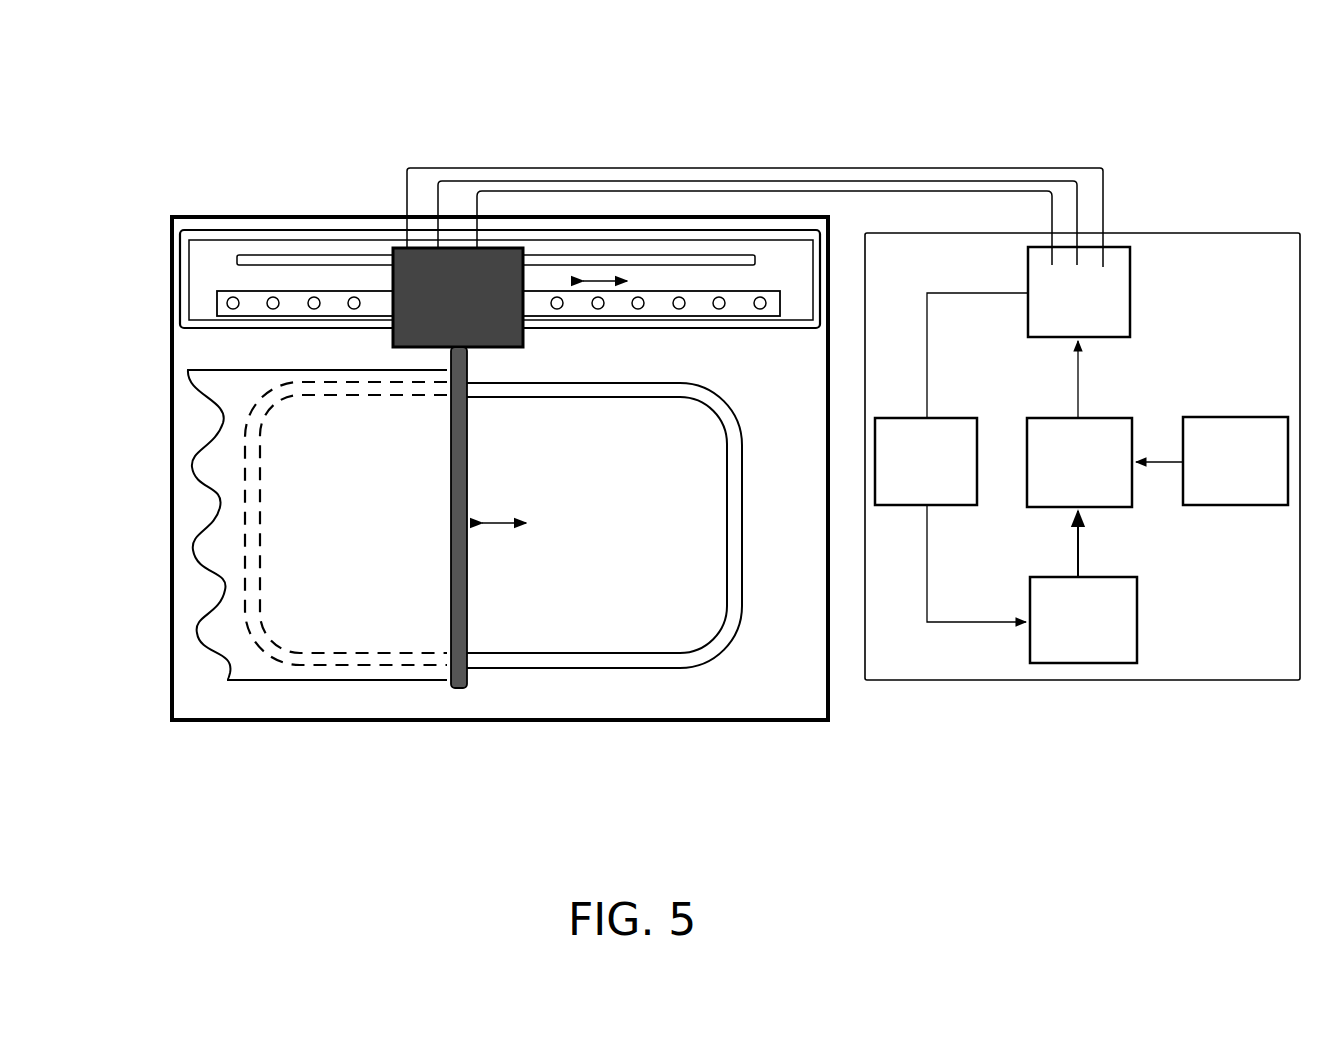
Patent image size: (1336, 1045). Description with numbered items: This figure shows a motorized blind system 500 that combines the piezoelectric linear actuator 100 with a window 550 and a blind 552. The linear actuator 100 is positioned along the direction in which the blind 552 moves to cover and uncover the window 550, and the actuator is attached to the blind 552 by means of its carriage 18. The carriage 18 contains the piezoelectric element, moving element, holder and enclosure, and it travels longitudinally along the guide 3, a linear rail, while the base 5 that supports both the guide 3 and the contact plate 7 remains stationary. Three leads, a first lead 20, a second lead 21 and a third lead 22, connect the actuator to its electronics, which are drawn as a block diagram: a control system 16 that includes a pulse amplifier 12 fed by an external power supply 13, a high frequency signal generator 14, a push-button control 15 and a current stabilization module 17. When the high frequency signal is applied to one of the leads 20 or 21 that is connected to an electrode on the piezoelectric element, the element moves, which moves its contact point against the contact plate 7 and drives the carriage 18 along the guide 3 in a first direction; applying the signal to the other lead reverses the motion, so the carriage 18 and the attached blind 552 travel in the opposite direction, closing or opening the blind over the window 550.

The motorized blind system 500 is at (680, 58).
The linear actuator 100 is at (222, 232).
The guide 3 is at (348, 300).
The carriage 18 is at (445, 238).
The contact plate 7 is at (615, 262).
The base 5 is at (772, 243).
The second lead 21 is at (853, 194).
The first lead 20 is at (913, 183).
The third lead 22 is at (947, 170).
The control system 16 is at (988, 230).
The push-button control 15 is at (1079, 292).
The pulse amplifier 12 is at (1079, 424).
The external power supply 13 is at (1212, 461).
The high frequency signal generator 14 is at (1083, 587).
The current stabilization module 17 is at (951, 457).
The window 550 is at (327, 680).
The blind 552 is at (615, 671).